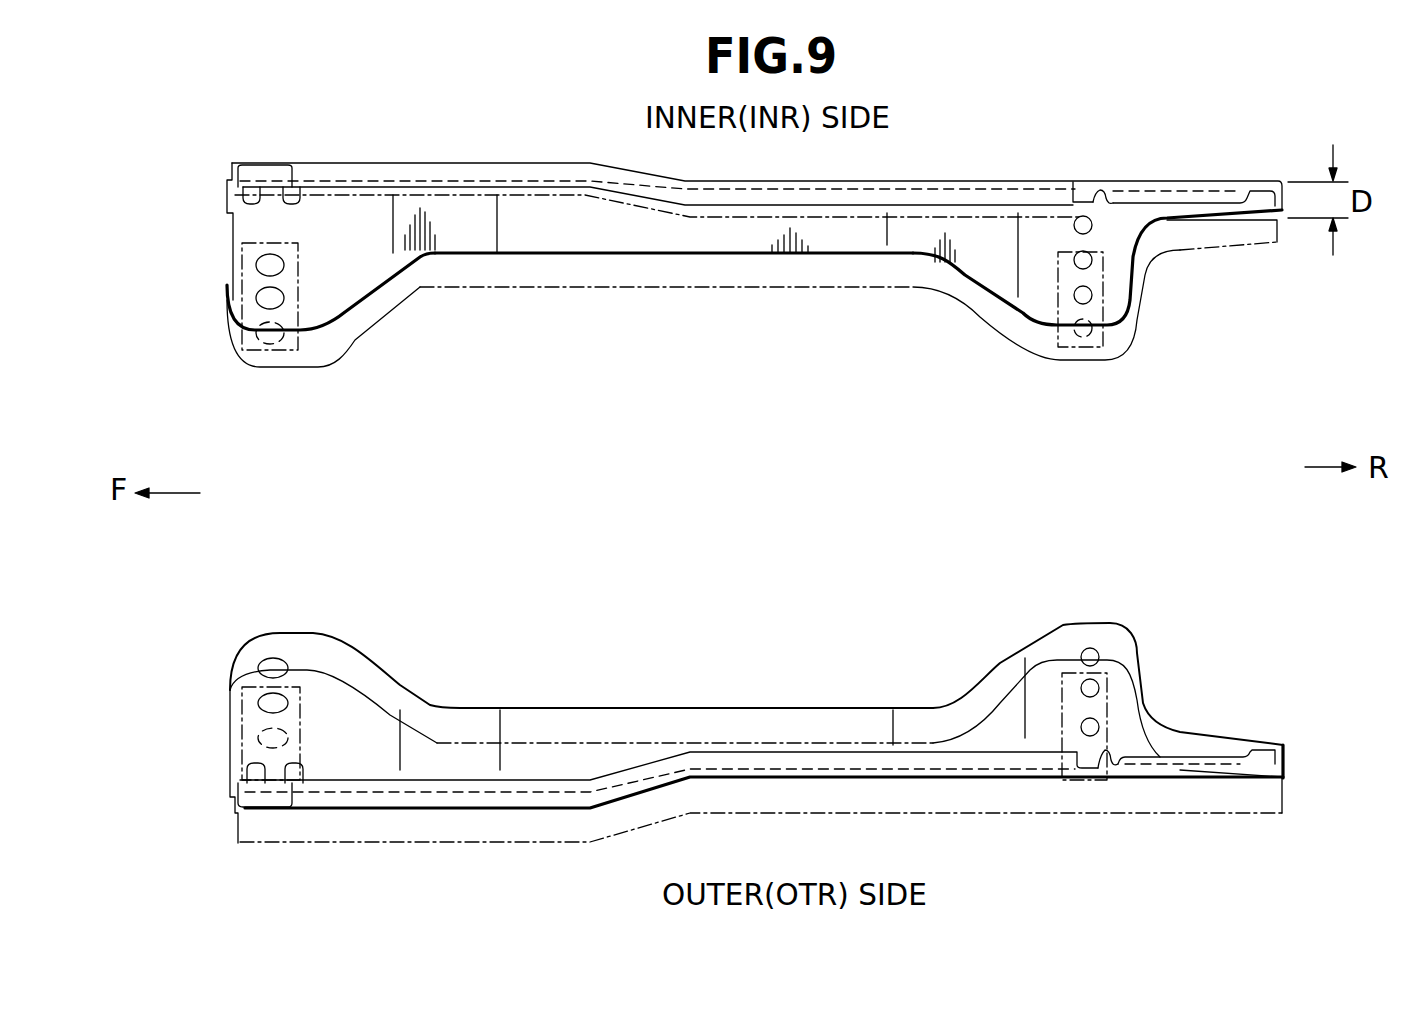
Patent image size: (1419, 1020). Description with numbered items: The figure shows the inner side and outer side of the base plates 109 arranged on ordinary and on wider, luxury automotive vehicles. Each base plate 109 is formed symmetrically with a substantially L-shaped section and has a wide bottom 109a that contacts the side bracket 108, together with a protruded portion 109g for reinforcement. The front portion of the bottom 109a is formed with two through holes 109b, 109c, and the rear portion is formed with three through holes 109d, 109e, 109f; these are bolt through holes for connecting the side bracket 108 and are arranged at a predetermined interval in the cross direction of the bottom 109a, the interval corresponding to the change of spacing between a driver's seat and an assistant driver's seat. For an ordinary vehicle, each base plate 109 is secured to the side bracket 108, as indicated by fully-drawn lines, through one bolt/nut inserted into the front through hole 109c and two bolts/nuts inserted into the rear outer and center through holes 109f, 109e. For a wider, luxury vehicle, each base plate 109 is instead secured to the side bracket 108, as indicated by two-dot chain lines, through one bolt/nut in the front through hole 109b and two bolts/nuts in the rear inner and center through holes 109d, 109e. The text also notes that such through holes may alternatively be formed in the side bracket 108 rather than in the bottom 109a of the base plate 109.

The side bracket 108 is at (242, 300).
The base plate 109 is at (747, 306).
The wide bottom 109a is at (595, 242).
The through hole 109b is at (277, 270).
The through hole 109c is at (275, 302).
The through hole 109d is at (1076, 229).
The through hole 109e is at (1092, 262).
The through hole 109f is at (1092, 298).
The protruded portion 109g is at (448, 165).